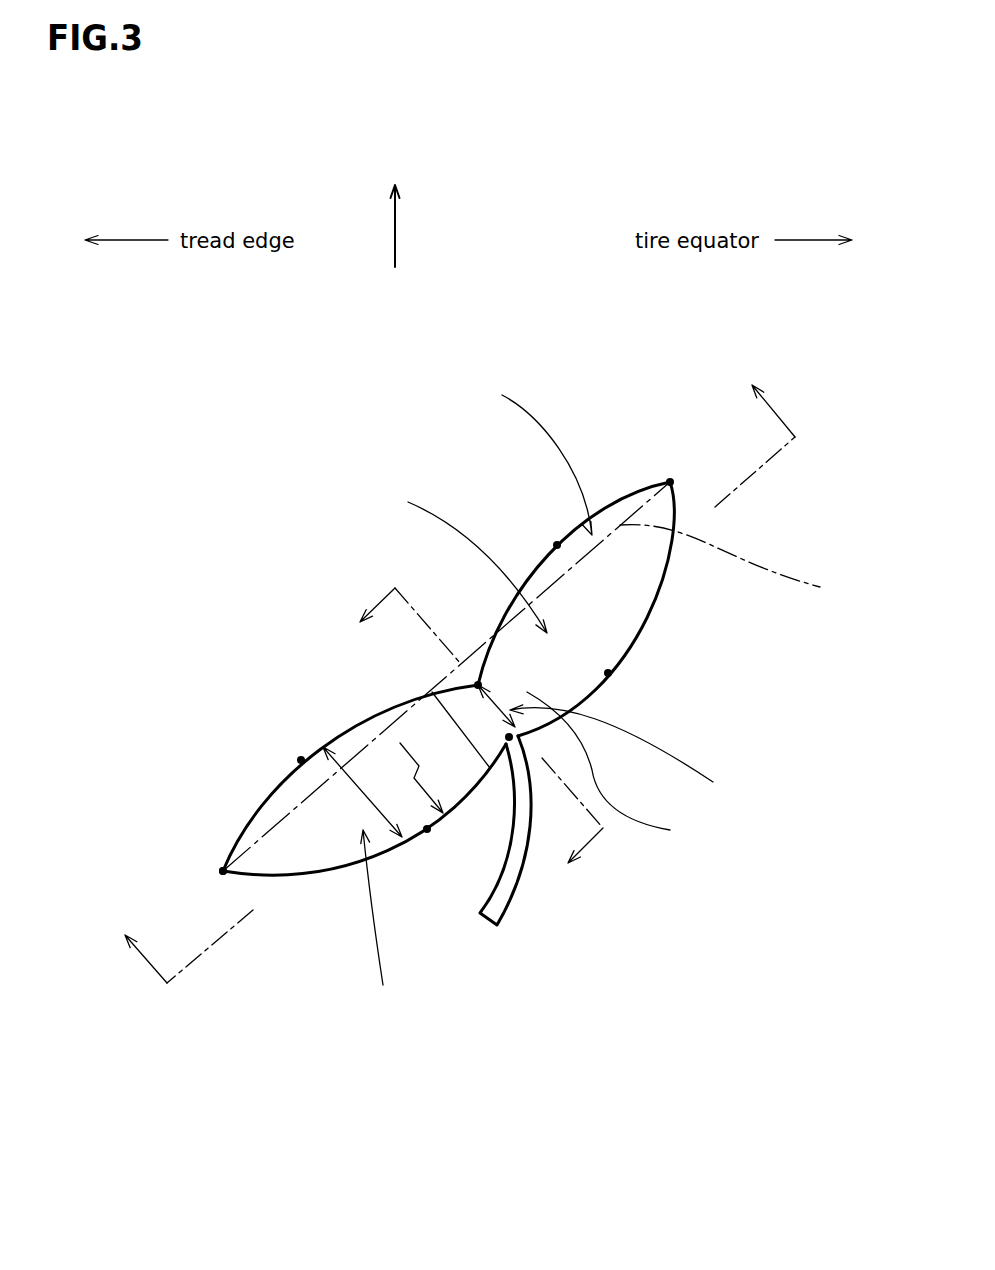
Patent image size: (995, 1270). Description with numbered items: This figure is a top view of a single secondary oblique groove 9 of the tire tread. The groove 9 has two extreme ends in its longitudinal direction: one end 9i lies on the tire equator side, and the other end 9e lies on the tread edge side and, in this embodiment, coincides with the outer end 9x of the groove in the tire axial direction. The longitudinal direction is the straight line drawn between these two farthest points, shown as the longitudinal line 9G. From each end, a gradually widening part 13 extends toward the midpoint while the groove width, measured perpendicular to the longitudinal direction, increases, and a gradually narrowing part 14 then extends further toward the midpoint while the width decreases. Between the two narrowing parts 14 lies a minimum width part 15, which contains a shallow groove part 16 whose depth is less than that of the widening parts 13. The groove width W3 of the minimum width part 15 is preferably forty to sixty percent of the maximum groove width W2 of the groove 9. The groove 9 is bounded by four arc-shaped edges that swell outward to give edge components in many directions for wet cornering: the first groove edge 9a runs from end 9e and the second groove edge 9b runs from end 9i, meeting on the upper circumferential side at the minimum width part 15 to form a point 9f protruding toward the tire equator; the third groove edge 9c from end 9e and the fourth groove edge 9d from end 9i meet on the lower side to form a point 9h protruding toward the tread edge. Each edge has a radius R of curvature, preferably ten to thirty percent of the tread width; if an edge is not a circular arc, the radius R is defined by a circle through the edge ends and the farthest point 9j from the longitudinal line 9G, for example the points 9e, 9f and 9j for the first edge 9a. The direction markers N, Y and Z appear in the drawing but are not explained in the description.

The secondary oblique groove 9 is at (447, 701).
The first groove edge 9a is at (279, 788).
The second groove edge 9b is at (604, 510).
The third groove edge 9c is at (347, 872).
The fourth groove edge 9d is at (668, 553).
The extreme end 9e is at (147, 845).
The outer end 9x is at (223, 871).
The protruding point 9f is at (478, 685).
The longitudinal line 9G is at (739, 562).
The protruding point 9h is at (509, 738).
The extreme end 9i is at (670, 482).
The farthest point 9j is at (301, 760).
The gradually widening part 13 is at (476, 691).
The gradually narrowing part 14 is at (461, 561).
The minimum width part 15 is at (617, 769).
The shallow groove part 16 is at (626, 755).
The maximum groove width W2 is at (368, 790).
The groove width of minimum width part W3 is at (500, 708).
The radius of curvature R is at (422, 778).
The tire circumferential direction N is at (395, 232).
The groove width direction axis Y is at (454, 673).
The groove longitudinal direction axis Z is at (469, 734).